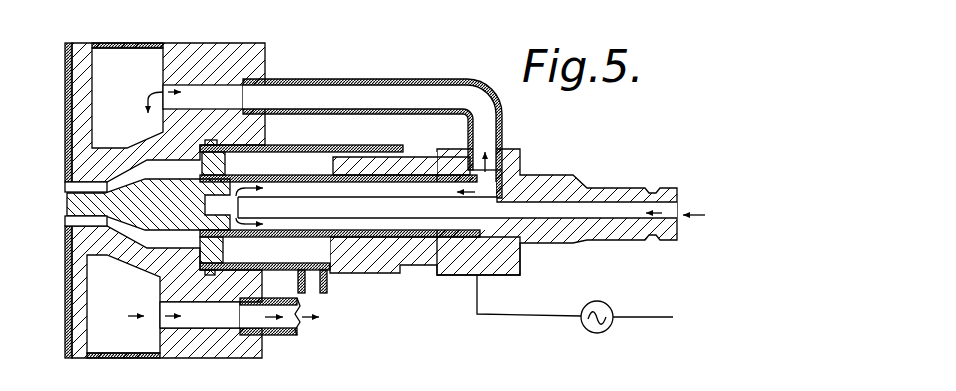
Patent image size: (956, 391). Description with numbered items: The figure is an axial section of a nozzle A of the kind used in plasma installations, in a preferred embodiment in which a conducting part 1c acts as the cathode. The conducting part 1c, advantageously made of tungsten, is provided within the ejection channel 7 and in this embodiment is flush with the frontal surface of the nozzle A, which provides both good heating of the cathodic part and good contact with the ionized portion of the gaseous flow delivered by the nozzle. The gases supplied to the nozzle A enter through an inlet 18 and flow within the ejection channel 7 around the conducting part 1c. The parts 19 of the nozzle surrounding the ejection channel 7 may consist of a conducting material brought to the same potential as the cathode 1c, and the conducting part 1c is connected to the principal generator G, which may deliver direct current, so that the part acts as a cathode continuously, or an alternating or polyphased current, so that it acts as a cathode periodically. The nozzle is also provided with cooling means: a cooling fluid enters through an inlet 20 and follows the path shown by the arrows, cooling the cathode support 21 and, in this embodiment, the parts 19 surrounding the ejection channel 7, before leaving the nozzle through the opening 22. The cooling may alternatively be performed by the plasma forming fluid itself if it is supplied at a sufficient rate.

The nozzle A is at (236, 41).
The conducting part 1c is at (70, 211).
The ejection channel 7 is at (85, 183).
The parts of the nozzle surrounding the ejection channel 19 is at (127, 153).
The cathode support 21 is at (228, 176).
The inlet for a cooling fluid 20 is at (651, 191).
The inlet 18 is at (328, 284).
The inlet 22 is at (278, 335).
The generator G is at (607, 303).